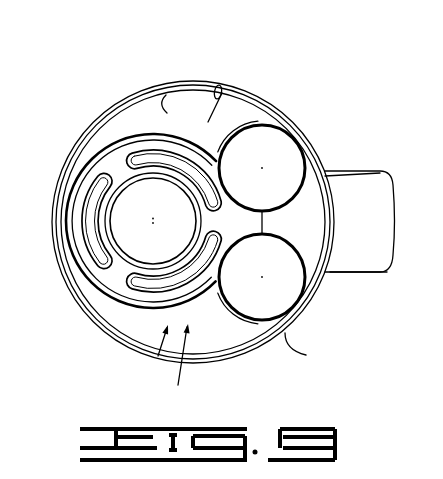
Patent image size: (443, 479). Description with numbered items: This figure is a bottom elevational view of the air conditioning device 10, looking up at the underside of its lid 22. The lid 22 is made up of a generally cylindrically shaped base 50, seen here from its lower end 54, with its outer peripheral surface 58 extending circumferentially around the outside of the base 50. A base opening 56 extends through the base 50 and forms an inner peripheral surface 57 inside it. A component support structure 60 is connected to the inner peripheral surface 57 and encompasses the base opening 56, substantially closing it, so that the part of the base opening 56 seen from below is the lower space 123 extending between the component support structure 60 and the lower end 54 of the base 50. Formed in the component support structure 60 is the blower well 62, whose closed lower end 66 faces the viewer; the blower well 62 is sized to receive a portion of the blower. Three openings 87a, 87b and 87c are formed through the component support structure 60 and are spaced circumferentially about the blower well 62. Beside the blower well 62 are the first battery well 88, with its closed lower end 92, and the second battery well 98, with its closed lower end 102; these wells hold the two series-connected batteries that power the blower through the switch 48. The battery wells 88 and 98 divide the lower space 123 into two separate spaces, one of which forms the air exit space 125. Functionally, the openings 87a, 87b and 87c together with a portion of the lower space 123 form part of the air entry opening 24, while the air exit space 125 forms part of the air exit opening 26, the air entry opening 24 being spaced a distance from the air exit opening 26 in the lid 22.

The air conditioning device 10 is at (328, 297).
The lid 22 is at (243, 88).
The air entry opening 24 is at (176, 365).
The air exit opening 26 is at (324, 252).
The switch 48 is at (366, 172).
The base 50 is at (173, 82).
The lower end 54 is at (263, 100).
The base opening 56 is at (221, 78).
The inner peripheral surface 57 is at (179, 109).
The outer peripheral surface 58 is at (308, 347).
The component support structure 60 is at (238, 92).
The blower well 62 is at (135, 215).
The lower end 66 is at (140, 247).
The opening 87a is at (147, 159).
The opening 87b is at (97, 250).
The opening 87c is at (153, 289).
The first battery well 88 is at (273, 292).
The lower end 92 is at (259, 303).
The second battery well 98 is at (282, 173).
The lower end 102 is at (279, 152).
The lower space 123 is at (158, 357).
The air exit space 125 is at (322, 200).